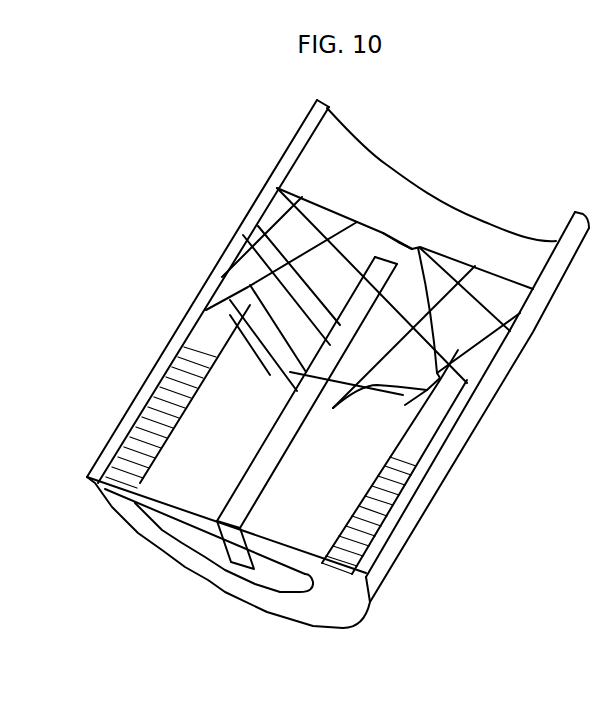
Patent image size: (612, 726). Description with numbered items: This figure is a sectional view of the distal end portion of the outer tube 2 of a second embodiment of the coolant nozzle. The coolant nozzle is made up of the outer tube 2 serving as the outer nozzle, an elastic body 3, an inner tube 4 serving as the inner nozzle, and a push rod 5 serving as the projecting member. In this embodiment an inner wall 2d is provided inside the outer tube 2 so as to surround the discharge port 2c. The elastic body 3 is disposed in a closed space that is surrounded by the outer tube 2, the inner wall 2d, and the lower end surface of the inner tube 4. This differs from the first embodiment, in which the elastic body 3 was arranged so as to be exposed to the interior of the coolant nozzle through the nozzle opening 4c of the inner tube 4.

The outer tube 2 is at (303, 122).
The discharge port 2c is at (274, 585).
The inner wall 2d is at (173, 420).
The elastic body 3 is at (365, 522).
The inner tube 4 is at (243, 235).
The nozzle opening 4c is at (415, 243).
The push rod 5 is at (327, 363).